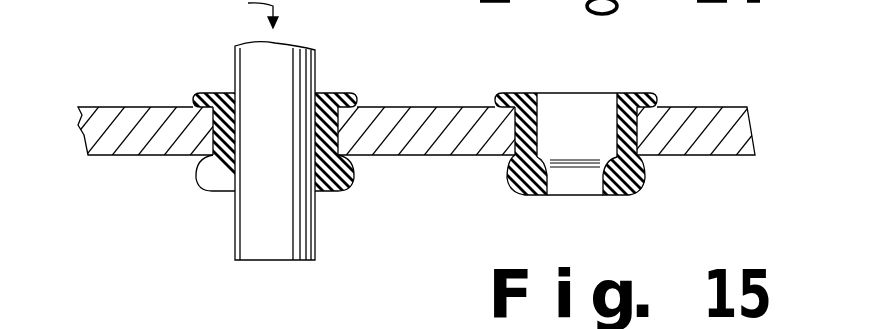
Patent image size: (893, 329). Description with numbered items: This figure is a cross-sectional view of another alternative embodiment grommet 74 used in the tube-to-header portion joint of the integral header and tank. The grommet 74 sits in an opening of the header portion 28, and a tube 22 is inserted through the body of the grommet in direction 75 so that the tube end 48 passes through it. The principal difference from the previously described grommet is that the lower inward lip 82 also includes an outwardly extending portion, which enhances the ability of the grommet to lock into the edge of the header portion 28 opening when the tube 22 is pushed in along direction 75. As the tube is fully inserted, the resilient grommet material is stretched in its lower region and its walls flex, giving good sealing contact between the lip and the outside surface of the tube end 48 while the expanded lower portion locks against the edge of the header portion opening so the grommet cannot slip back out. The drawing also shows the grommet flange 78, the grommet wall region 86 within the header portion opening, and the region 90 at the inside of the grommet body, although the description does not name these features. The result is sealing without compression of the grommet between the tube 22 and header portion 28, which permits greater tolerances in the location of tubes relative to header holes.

The tube 22 is at (247, 58).
The header portion 28 is at (146, 149).
The tube end 48 is at (272, 262).
The alternative embodiment grommet 74 is at (446, 138).
The direction 75 is at (245, 14).
The flange 78 is at (232, 97).
The lower inward lip 82 is at (205, 183).
The sleeve wall 86 is at (200, 130).
The internal threads / bore 90 is at (237, 123).